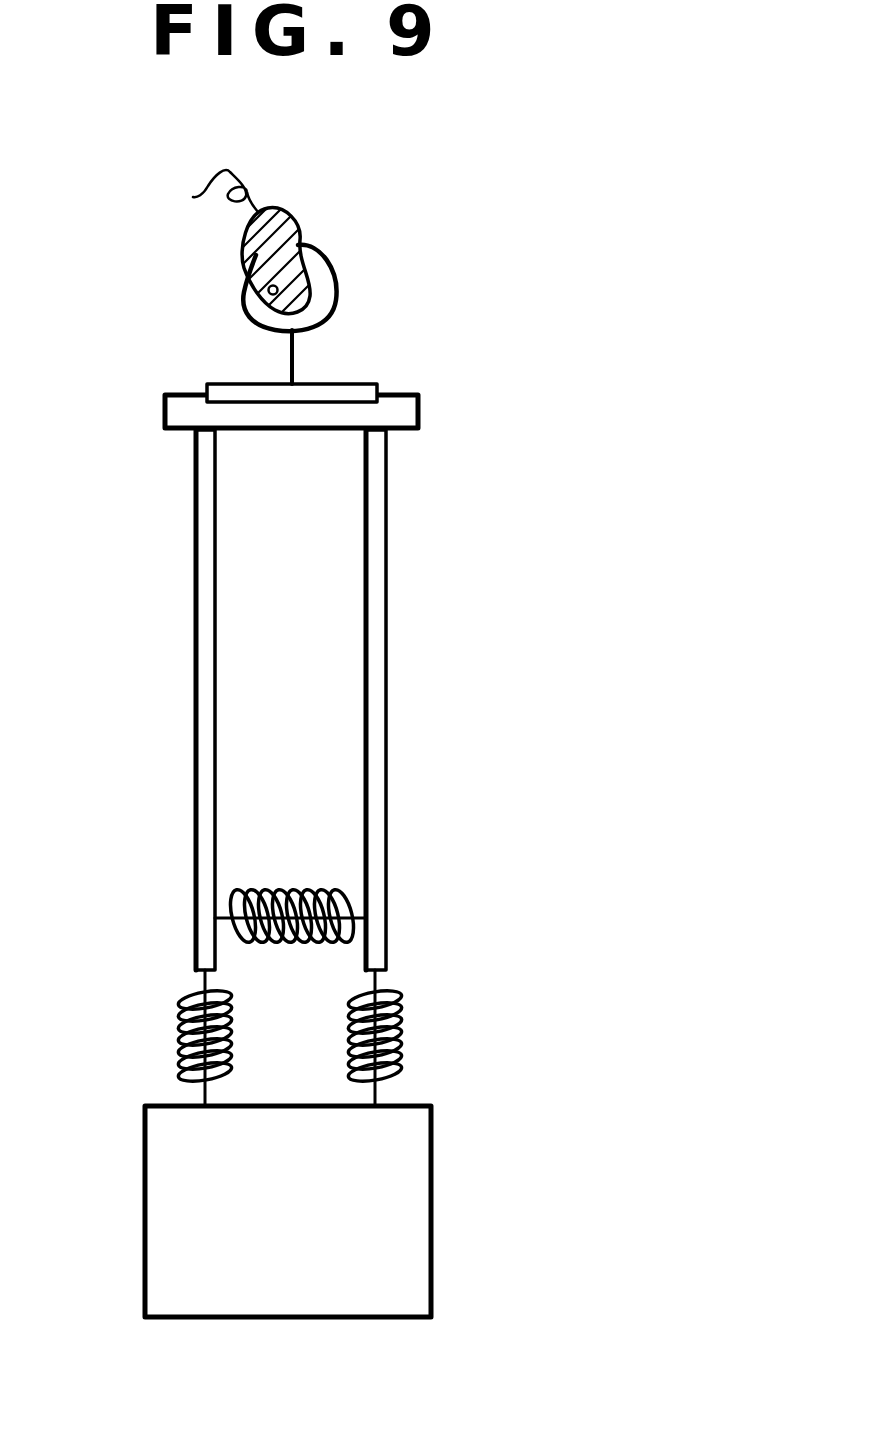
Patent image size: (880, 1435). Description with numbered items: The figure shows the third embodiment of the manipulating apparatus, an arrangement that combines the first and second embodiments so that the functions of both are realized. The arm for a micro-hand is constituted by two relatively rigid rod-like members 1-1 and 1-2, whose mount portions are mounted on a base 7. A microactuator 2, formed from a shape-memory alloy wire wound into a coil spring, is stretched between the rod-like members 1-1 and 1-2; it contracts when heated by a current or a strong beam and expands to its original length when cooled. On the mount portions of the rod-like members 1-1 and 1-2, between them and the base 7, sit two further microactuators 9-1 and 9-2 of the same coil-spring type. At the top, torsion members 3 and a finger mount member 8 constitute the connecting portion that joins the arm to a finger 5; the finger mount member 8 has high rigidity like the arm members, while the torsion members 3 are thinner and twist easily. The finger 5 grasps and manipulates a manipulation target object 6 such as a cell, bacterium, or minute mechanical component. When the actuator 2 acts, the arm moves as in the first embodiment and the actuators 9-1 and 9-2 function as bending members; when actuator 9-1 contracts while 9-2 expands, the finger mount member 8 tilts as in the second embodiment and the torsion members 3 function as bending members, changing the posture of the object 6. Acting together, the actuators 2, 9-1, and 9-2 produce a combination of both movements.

The rod-like member 1-1 is at (194, 800).
The rod-like member 1-2 is at (388, 701).
The microactuator 2 is at (288, 890).
The torsion member 3 is at (421, 407).
The finger 5 is at (339, 290).
The manipulation target object 6 is at (300, 222).
The base 7 is at (434, 1208).
The finger mount member 8 is at (337, 383).
The microactuator 9-1 is at (177, 1043).
The microactuator 9-2 is at (403, 1028).